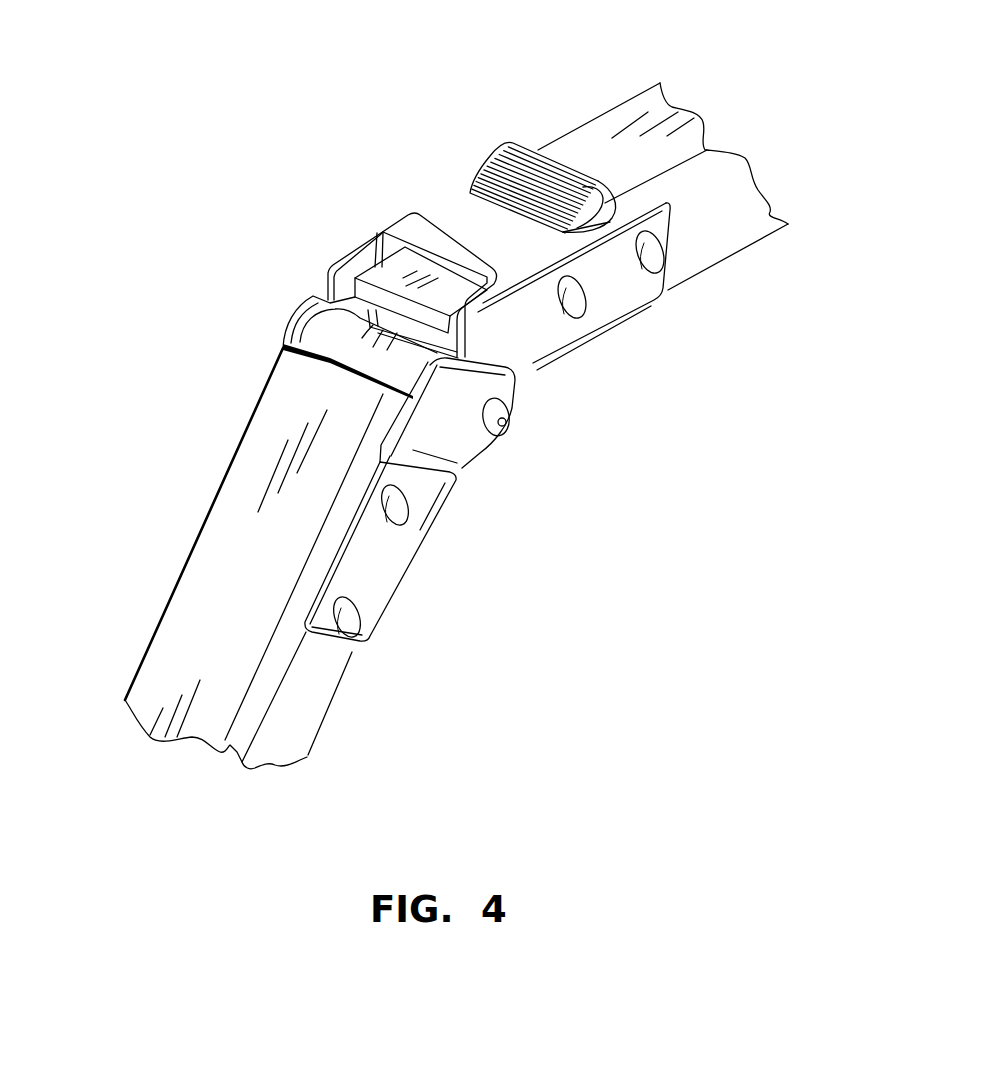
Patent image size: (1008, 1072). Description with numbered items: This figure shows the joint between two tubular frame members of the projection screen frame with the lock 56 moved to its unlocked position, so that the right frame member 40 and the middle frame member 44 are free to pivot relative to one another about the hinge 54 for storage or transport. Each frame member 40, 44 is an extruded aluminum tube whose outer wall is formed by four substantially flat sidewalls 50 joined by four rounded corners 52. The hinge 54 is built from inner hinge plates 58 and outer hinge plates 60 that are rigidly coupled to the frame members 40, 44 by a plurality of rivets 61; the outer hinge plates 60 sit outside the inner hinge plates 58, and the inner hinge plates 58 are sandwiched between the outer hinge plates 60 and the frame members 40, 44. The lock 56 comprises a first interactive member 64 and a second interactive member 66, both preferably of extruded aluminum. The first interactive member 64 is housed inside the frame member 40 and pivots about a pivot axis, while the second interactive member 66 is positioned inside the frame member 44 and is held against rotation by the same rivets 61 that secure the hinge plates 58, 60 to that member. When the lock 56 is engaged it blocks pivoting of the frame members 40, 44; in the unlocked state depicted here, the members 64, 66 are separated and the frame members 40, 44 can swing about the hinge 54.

The right tubular frame member 40 is at (459, 398).
The middle tubular frame member 44 is at (212, 562).
The flat sidewall 50 is at (592, 133).
The rounded corner 52 is at (697, 170).
The hinge 54 is at (528, 422).
The lock 56 is at (316, 228).
The inner hinge plate 58 is at (528, 422).
The outer hinge plate 60 is at (463, 447).
The rivet 61 is at (653, 250).
The first interactive member 64 is at (494, 140).
The second interactive member 66 is at (300, 330).